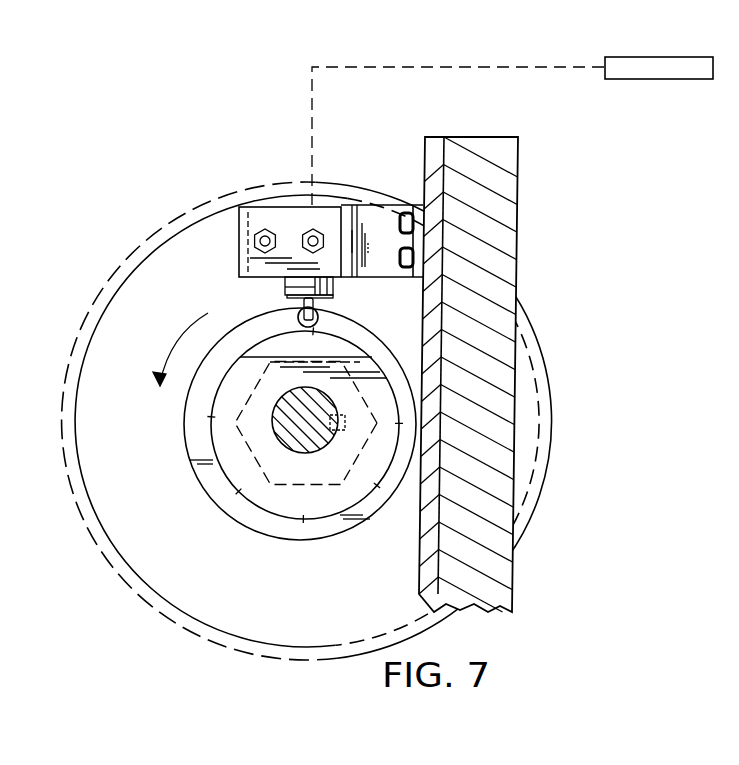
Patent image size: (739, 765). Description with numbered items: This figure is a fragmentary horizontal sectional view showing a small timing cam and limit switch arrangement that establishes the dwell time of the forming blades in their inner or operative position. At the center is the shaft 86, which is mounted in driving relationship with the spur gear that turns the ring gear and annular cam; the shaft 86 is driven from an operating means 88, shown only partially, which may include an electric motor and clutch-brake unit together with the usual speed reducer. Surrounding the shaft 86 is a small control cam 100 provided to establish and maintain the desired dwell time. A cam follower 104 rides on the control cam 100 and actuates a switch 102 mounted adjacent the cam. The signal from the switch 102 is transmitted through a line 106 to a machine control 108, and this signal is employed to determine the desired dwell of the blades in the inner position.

The shaft 86 is at (318, 452).
The operating means 88 is at (91, 540).
The control cam 100 is at (217, 418).
The switch 102 is at (292, 218).
The cam follower 104 is at (300, 309).
The line 106 is at (390, 65).
The machine control 108 is at (668, 55).